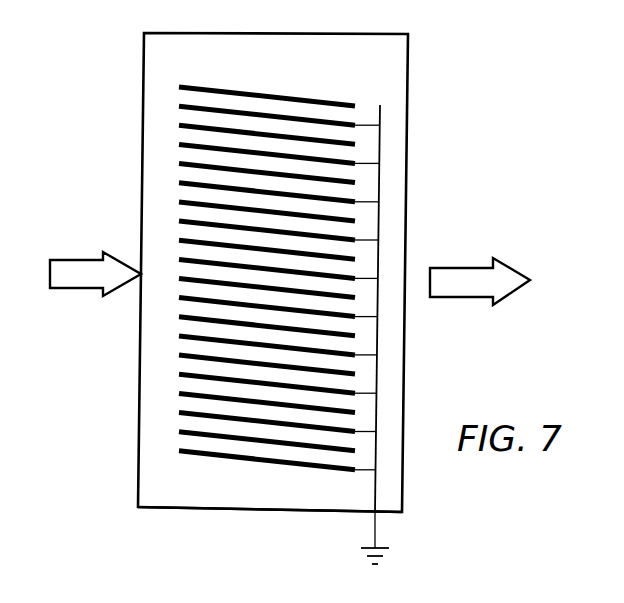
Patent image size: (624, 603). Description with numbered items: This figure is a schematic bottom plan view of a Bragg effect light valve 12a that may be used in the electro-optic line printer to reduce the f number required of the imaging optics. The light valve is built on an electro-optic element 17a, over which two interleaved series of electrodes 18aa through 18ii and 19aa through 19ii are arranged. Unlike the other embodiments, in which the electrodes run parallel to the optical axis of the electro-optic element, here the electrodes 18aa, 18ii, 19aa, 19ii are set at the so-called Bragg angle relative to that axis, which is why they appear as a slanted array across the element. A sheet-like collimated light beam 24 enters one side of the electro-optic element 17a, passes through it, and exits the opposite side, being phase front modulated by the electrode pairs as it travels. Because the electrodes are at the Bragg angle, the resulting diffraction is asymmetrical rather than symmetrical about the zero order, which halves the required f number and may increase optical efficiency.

The Bragg effect light valve 12a is at (412, 104).
The electro-optic element 17a is at (190, 512).
The electrode 18aa is at (263, 93).
The electrode 18ii is at (178, 434).
The electrode 19aa is at (182, 106).
The electrode 19ii is at (264, 462).
The light beam 24 is at (75, 258).